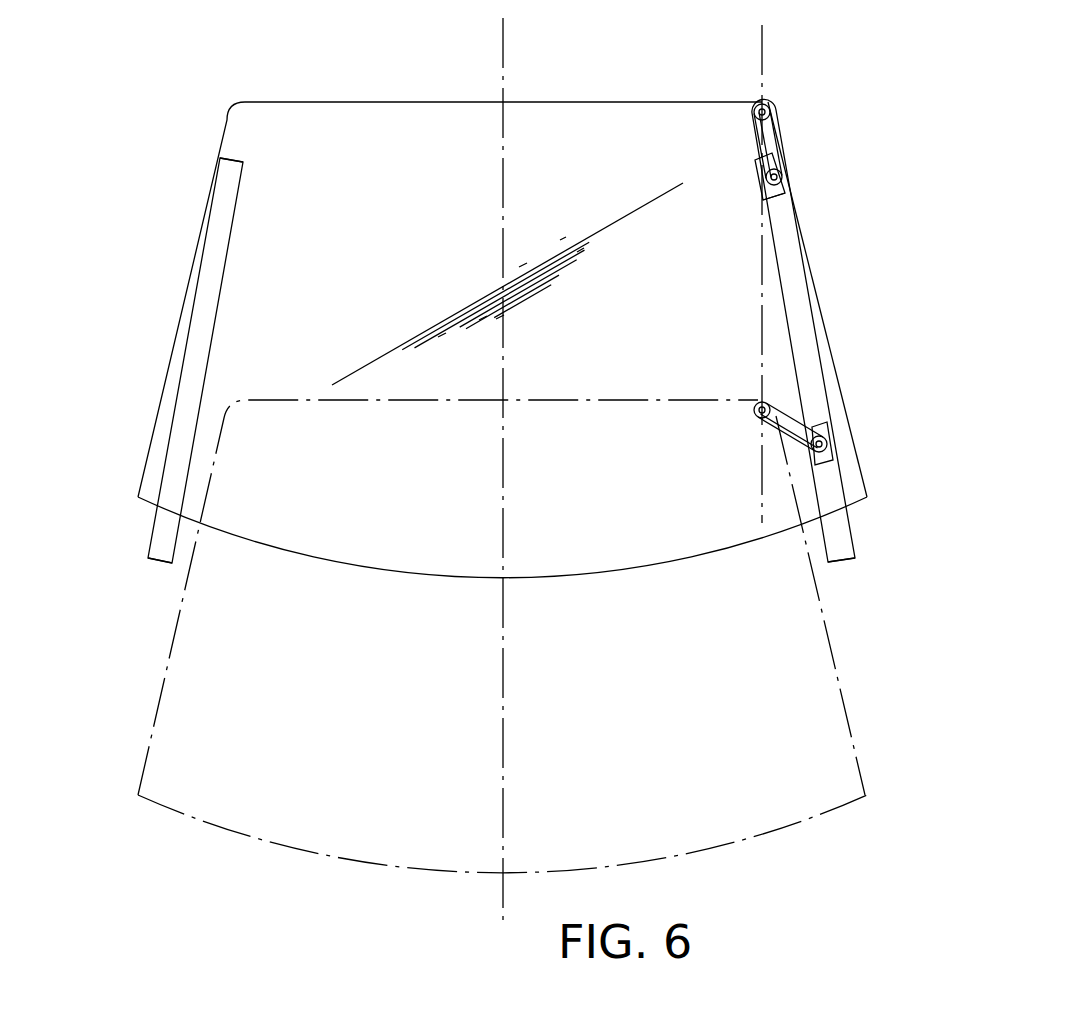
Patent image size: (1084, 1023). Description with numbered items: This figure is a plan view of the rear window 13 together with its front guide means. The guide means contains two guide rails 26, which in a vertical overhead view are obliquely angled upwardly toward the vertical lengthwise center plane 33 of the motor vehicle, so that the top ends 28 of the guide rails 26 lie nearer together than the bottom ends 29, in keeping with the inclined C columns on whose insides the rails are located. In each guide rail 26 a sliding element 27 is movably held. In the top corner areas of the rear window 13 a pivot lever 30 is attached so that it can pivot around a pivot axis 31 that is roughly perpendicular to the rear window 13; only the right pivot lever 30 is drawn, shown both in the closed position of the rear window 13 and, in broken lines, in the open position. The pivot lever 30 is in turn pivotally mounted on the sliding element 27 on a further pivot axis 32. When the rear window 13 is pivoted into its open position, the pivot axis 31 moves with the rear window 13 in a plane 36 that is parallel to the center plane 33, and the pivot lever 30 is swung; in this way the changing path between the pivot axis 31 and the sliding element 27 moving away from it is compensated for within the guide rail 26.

The rear window 13 is at (434, 263).
The guide rail 26 is at (193, 346).
The sliding element 27 is at (777, 197).
The top end 28 is at (220, 159).
The bottom end 29 is at (157, 557).
The pivot lever 30 is at (772, 138).
The pivot axis 31 is at (770, 99).
The pivot axis 32 is at (781, 178).
The center plane 33 is at (505, 50).
The plane 36 is at (762, 43).